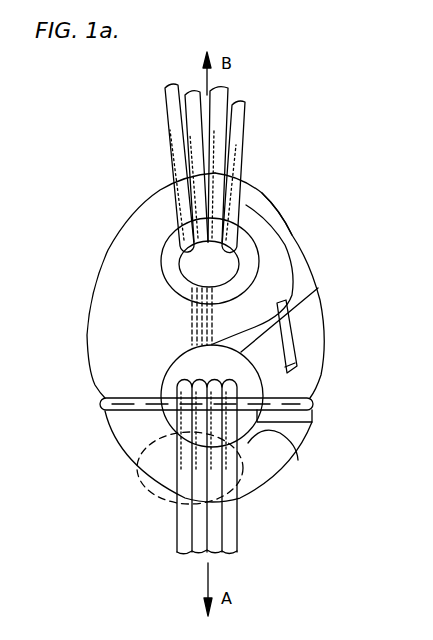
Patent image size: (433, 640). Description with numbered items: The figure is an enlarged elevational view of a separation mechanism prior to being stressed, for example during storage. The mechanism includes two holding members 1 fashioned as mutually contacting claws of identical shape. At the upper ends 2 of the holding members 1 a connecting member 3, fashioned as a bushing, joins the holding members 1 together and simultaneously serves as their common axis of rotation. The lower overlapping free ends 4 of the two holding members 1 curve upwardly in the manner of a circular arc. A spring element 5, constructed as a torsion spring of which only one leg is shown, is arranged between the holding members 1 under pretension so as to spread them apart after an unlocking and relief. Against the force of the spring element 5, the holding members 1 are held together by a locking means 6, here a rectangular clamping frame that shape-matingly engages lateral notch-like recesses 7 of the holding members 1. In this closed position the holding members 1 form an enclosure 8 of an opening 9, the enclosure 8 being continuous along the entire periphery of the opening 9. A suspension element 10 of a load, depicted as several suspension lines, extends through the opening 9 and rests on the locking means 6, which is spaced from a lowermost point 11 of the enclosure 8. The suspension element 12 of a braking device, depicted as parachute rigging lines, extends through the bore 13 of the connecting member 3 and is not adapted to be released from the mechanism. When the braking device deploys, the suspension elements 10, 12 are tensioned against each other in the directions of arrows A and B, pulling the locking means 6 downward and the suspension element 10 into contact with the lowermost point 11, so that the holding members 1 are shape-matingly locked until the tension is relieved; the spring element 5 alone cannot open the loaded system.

The holding members 1 is at (323, 332).
The upper ends 2 is at (157, 213).
The connecting member 3 is at (248, 257).
The lower overlapping free ends 4 is at (277, 453).
The spring element 5 is at (290, 330).
The locking means 6 is at (318, 405).
The lateral notch-like recesses 7 is at (318, 395).
The enclosure 8 is at (168, 372).
The opening 9 is at (188, 348).
The suspension element 10 is at (233, 520).
The lowermost point 11 is at (162, 493).
The suspension element of braking device 12 is at (240, 150).
The bore 13 is at (185, 265).